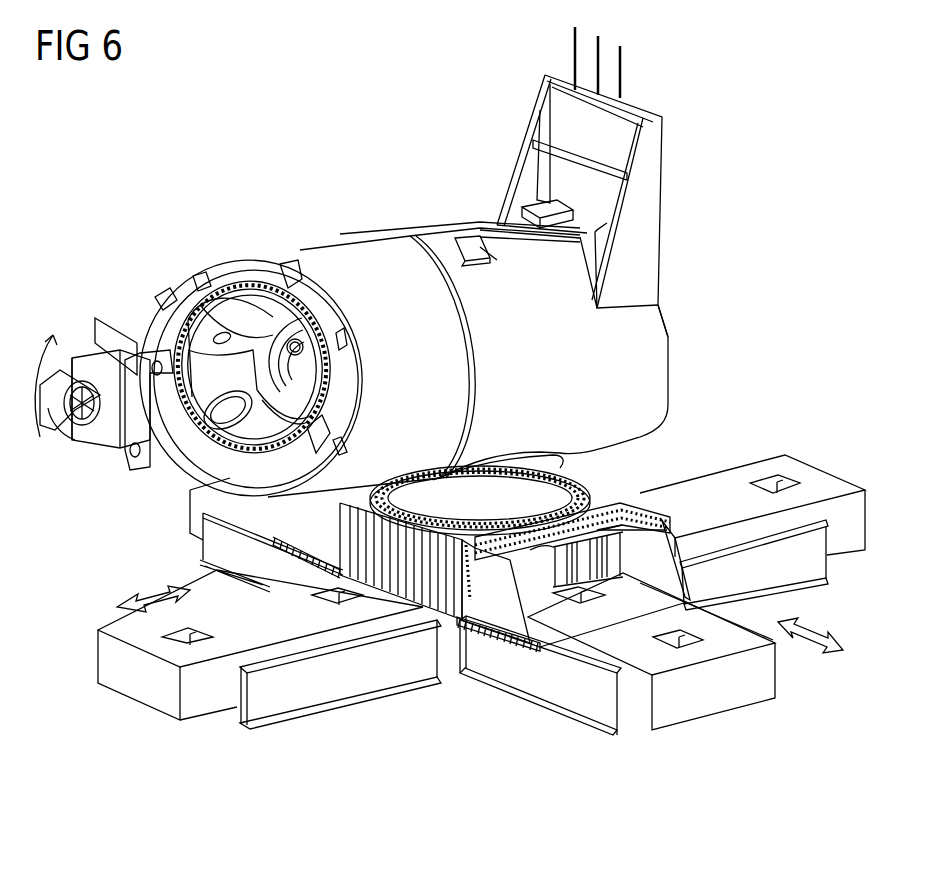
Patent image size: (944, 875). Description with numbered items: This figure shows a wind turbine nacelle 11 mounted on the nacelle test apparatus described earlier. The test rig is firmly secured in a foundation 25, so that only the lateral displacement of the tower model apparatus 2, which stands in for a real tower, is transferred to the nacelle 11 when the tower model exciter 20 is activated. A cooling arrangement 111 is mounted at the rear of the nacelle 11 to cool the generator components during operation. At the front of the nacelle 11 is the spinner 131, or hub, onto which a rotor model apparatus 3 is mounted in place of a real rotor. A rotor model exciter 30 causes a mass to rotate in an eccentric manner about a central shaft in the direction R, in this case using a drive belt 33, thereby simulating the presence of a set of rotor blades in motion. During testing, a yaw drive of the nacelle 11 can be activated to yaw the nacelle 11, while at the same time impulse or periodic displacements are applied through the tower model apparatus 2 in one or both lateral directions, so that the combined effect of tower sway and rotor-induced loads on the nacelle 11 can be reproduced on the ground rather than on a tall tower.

The tower model apparatus 2 is at (612, 476).
The rotor model apparatus 3 is at (68, 372).
The nacelle 11 is at (366, 248).
The tower model exciter 20 is at (798, 474).
The foundation 25 is at (367, 683).
The rotor model exciter 30 is at (100, 450).
The drive belt 33 is at (103, 410).
The cooling arrangement 111 is at (652, 193).
The spinner 131 is at (227, 275).
The direction of rotation R is at (59, 401).